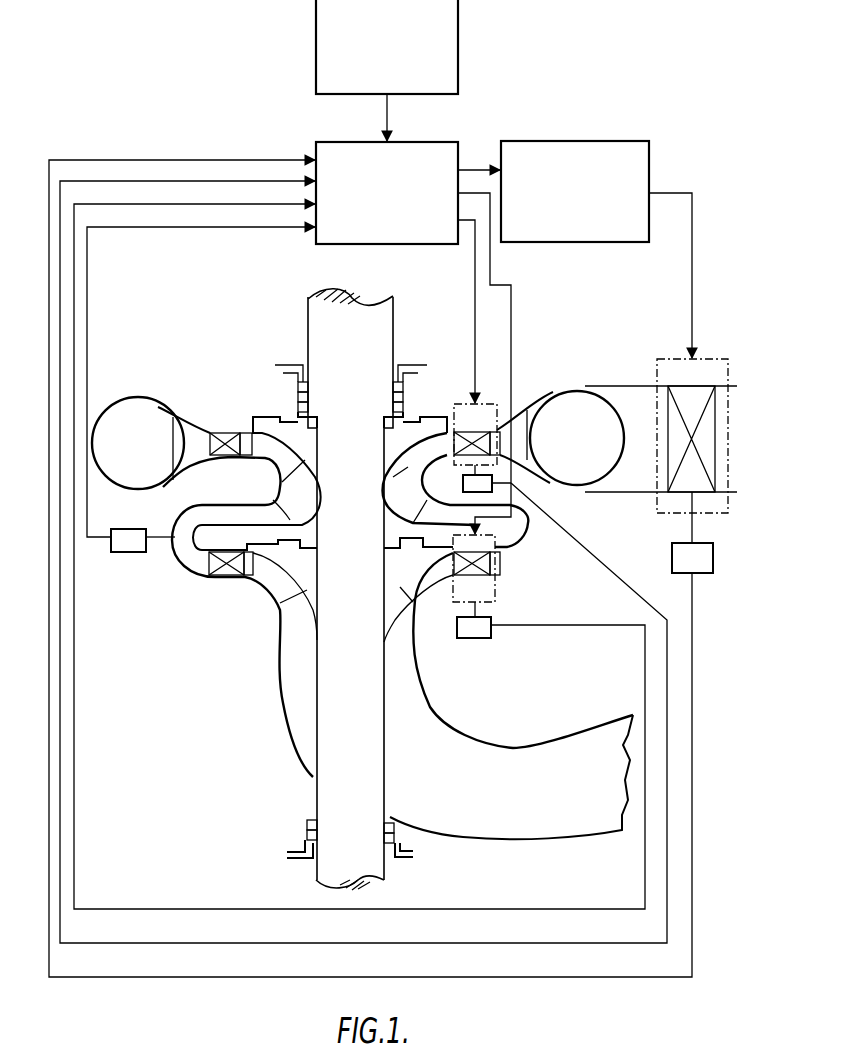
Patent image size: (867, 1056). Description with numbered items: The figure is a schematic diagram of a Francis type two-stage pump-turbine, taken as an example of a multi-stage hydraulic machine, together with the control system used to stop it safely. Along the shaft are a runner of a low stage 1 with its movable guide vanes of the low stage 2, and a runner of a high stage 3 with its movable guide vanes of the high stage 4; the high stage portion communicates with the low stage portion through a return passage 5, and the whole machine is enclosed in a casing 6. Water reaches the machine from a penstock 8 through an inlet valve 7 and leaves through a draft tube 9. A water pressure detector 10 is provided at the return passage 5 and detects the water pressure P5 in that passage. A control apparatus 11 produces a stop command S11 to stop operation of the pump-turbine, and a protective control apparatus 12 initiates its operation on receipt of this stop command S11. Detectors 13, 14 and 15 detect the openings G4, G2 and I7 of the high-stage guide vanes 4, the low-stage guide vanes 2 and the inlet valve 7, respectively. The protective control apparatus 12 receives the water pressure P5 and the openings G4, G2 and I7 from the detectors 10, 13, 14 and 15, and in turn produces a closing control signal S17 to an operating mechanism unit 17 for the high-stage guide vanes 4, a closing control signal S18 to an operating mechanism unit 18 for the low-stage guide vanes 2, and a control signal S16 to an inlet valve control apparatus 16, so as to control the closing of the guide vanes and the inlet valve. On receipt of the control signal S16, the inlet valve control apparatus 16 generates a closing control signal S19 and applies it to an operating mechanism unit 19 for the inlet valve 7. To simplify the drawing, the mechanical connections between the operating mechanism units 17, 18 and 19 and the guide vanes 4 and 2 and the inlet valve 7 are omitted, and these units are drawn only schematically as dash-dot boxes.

The runner of a low stage 1 is at (412, 590).
The movable guide vanes of the low stage 2 is at (493, 563).
The runner of a high stage 3 is at (407, 468).
The movable guide vanes of the high stage 4 is at (470, 428).
The return passage 5 is at (527, 535).
The casing 6 is at (580, 483).
The inlet valve 7 is at (677, 387).
The penstock 8 is at (733, 497).
The draft tube 9 is at (293, 707).
The water pressure detector 10 is at (123, 547).
The control apparatus 11 is at (448, 36).
The protective control apparatus 12 is at (342, 147).
The detector 13 is at (465, 480).
The detector 14 is at (477, 630).
The detector 15 is at (678, 552).
The inlet valve control apparatus 16 is at (590, 140).
The operating mechanism unit 17 is at (465, 402).
The operating mechanism unit 18 is at (498, 600).
The operating mechanism unit 19 is at (705, 358).
The stop command S11 is at (390, 113).
The control signal S16 is at (473, 167).
The closing control signal S17 is at (475, 310).
The closing control signal S18 is at (511, 310).
The closing control signal S19 is at (692, 250).
The opening of the movable guide vanes of the high stage G4 is at (143, 180).
The opening of the movable guide vanes of the low stage G2 is at (188, 205).
The opening of the inlet valve I7 is at (205, 158).
The water pressure in the return passage P5 is at (230, 227).